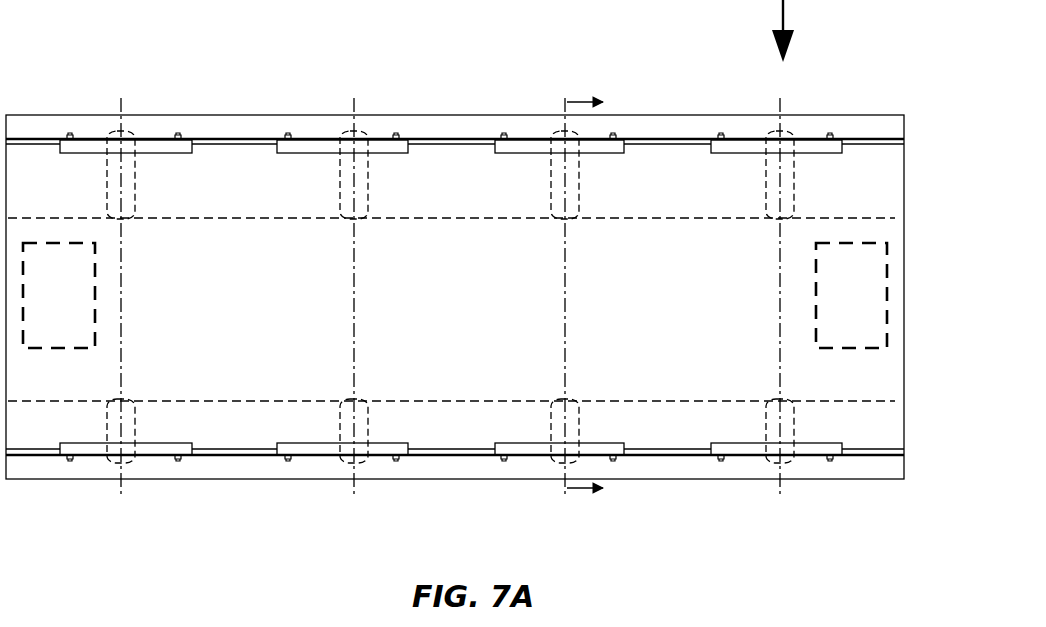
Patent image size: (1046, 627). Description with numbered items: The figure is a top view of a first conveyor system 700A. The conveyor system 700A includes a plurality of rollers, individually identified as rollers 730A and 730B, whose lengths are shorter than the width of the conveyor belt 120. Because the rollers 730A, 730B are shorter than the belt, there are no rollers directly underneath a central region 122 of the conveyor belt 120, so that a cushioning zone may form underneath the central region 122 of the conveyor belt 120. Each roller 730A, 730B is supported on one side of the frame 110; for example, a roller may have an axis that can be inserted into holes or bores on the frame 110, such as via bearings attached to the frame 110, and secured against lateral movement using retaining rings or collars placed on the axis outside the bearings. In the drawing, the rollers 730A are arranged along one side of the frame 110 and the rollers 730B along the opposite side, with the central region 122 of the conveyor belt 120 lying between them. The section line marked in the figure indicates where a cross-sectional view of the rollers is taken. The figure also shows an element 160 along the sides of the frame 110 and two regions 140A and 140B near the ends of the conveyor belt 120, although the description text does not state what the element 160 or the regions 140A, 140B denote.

The first conveyor system 700A is at (455, 277).
The frame 110 is at (262, 480).
The conveyor belt 120 is at (241, 200).
The central region 122 is at (451, 343).
The rail 160 is at (525, 139).
The roller 730A is at (351, 178).
The roller 730B is at (365, 427).
The module A 140A is at (851, 295).
The module B 140B is at (59, 295).